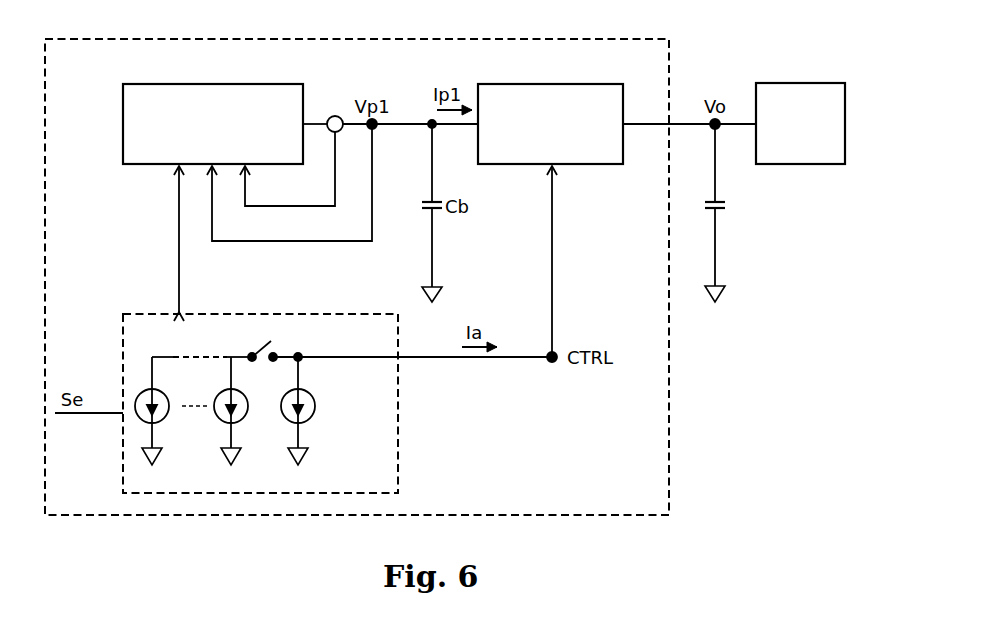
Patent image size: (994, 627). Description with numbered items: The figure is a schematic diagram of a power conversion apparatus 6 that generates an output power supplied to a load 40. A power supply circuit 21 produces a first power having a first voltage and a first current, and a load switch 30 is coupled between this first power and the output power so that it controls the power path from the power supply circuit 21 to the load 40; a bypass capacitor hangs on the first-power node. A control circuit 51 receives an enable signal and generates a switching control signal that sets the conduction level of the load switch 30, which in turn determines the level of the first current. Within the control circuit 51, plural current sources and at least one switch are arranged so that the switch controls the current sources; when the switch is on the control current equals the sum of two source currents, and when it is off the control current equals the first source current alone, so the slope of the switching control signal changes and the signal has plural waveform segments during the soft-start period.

The power conversion apparatus 6 is at (647, 39).
The power supply circuit 21 is at (273, 156).
The load switch 30 is at (594, 156).
The load 40 is at (816, 156).
The control circuit 51 is at (394, 488).